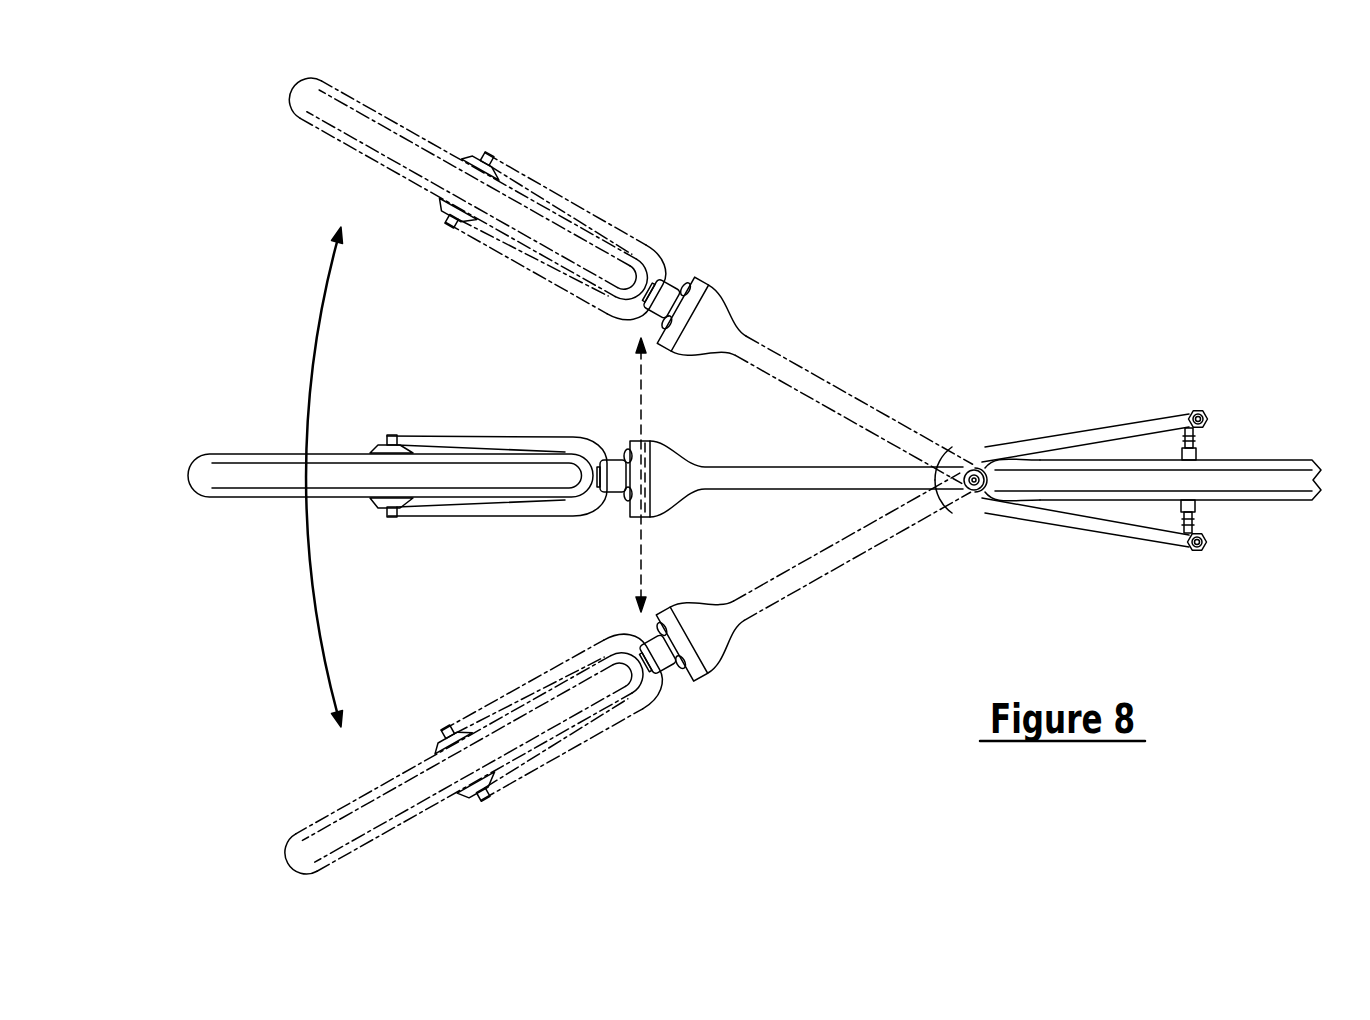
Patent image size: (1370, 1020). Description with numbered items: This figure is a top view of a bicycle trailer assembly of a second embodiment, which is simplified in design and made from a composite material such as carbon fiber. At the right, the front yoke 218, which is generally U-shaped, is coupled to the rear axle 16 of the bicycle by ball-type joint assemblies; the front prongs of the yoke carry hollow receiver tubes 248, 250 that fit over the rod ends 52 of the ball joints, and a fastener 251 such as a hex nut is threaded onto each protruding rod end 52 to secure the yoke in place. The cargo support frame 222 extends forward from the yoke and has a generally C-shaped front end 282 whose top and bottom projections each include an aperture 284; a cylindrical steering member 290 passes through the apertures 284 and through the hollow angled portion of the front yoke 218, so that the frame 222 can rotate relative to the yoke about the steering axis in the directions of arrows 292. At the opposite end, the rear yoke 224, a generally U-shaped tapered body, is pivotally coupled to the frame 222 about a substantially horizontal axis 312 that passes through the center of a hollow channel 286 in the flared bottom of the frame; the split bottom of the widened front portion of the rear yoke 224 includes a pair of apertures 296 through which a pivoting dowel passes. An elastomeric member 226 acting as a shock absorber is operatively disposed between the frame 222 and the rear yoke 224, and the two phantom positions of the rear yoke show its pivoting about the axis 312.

The rear axle 16 is at (1225, 452).
The rod end 52 is at (1190, 408).
The front yoke 218 is at (1090, 437).
The frame 222 is at (858, 478).
The rear yoke 224 is at (502, 424).
The elastomeric member 226 is at (605, 462).
The receiver tube 248 is at (1178, 560).
The receiver tube 250 is at (1200, 410).
The fastener 251 is at (1212, 415).
The front end 282 is at (960, 508).
The aperture 284 is at (952, 455).
The hollow channel 286 is at (645, 478).
The steering member 290 is at (976, 468).
The arrows 292 is at (310, 386).
The apertures 296 is at (640, 450).
The horizontal axis 312 is at (642, 388).